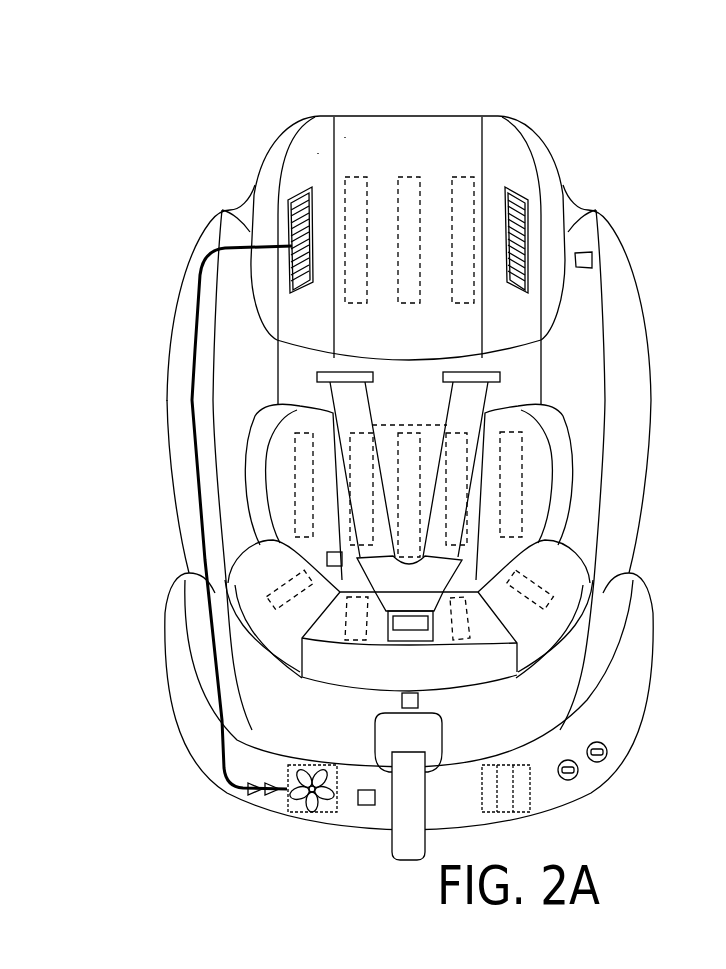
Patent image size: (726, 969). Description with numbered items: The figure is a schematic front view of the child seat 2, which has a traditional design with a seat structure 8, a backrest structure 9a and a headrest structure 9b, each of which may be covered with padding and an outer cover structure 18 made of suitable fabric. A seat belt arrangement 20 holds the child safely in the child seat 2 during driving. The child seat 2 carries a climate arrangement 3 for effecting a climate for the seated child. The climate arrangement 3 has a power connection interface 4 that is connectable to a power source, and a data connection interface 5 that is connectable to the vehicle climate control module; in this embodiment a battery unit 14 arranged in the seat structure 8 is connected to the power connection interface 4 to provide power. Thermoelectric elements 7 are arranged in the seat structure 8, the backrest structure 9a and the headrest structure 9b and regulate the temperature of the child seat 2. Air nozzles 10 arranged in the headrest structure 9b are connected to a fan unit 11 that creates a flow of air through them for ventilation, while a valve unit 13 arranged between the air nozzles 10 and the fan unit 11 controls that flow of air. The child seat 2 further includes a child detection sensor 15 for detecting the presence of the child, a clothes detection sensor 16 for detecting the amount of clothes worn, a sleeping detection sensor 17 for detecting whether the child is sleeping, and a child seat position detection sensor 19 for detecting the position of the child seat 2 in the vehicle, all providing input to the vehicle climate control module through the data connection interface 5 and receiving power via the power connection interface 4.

The child seat 2 is at (493, 104).
The climate arrangement 3 is at (587, 173).
The power connection interface 4 is at (578, 774).
The data connection interface 5 is at (607, 756).
The thermoelectric elements 7 is at (462, 177).
The seat structure 8 is at (587, 668).
The backrest structure 9a is at (210, 235).
The headrest structure 9b is at (345, 137).
The air nozzles 10 is at (293, 188).
The fan unit 11 is at (310, 813).
The valve unit 13 is at (267, 793).
The battery unit 14 is at (532, 790).
The child detection sensor 15 is at (400, 705).
The clothes detection sensor 16 is at (597, 258).
The sleeping detection sensor 17 is at (325, 560).
The outer cover structure 18 is at (318, 153).
The child seat position detection sensor 19 is at (364, 806).
The seat belt arrangement 20 is at (350, 398).